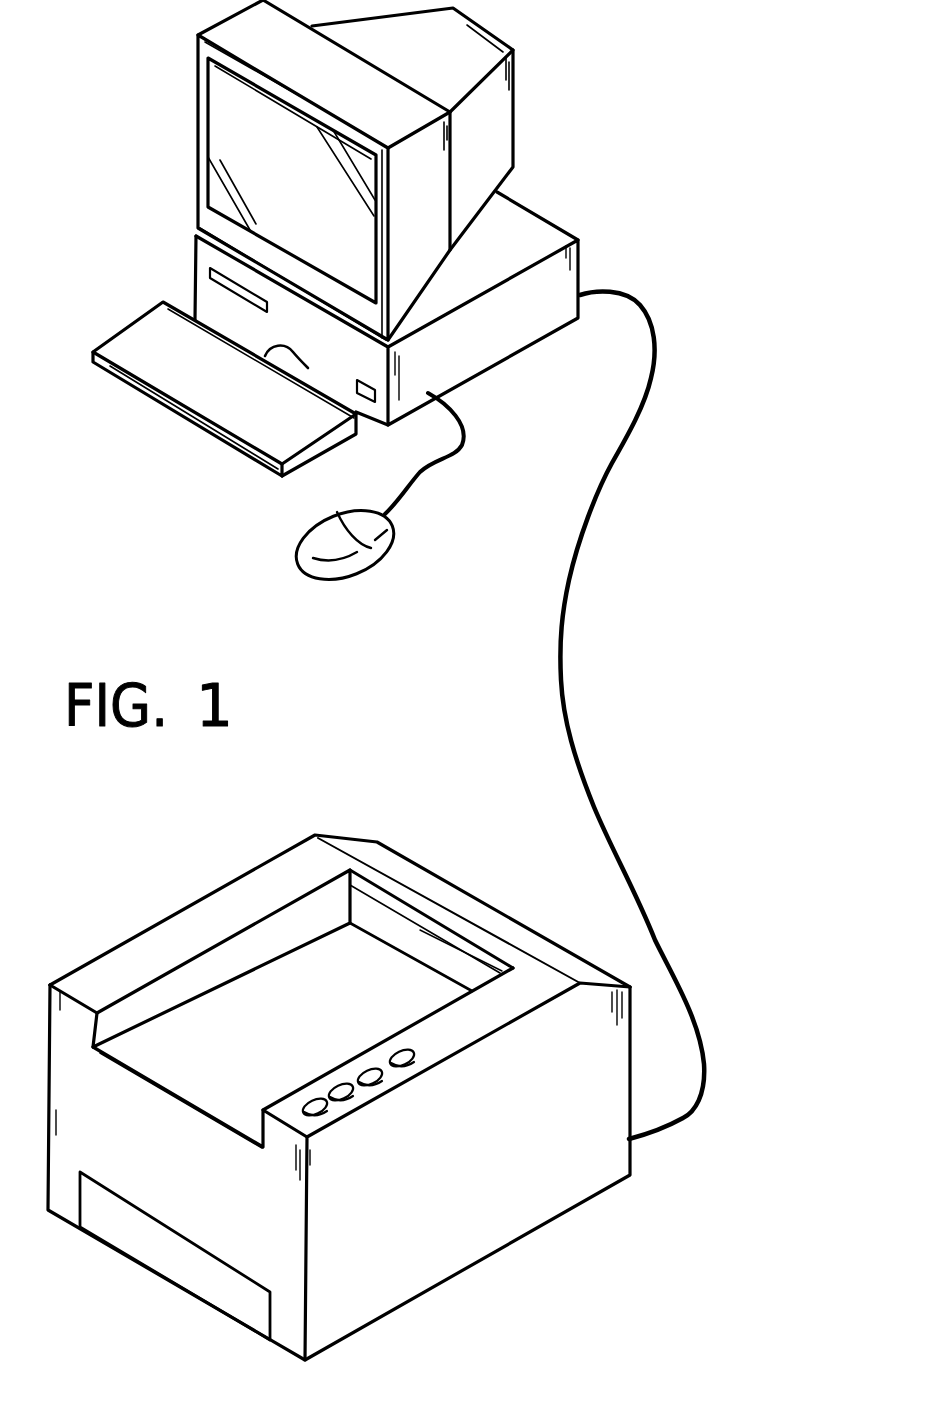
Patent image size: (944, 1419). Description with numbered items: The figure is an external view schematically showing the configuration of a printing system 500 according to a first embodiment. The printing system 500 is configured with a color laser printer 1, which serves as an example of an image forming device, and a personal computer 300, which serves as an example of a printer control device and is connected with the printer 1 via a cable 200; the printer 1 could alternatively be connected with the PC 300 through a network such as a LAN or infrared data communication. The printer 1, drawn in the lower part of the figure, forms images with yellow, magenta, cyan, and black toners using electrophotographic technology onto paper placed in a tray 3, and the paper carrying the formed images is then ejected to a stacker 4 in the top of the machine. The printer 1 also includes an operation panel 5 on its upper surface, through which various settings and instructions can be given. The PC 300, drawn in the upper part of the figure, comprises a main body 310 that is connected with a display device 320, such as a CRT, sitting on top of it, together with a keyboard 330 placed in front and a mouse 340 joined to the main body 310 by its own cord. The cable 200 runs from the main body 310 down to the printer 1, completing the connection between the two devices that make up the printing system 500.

The color laser printer 1 is at (603, 1213).
The tray 3 is at (124, 1240).
The stacker 4 is at (437, 990).
The operation panel 5 is at (333, 1058).
The cable 200 is at (564, 627).
The personal computer 300 is at (557, 129).
The main body 310 is at (493, 347).
The display device 320 is at (207, 96).
The keyboard 330 is at (198, 418).
The mouse 340 is at (338, 552).
The printing system 500 is at (739, 251).